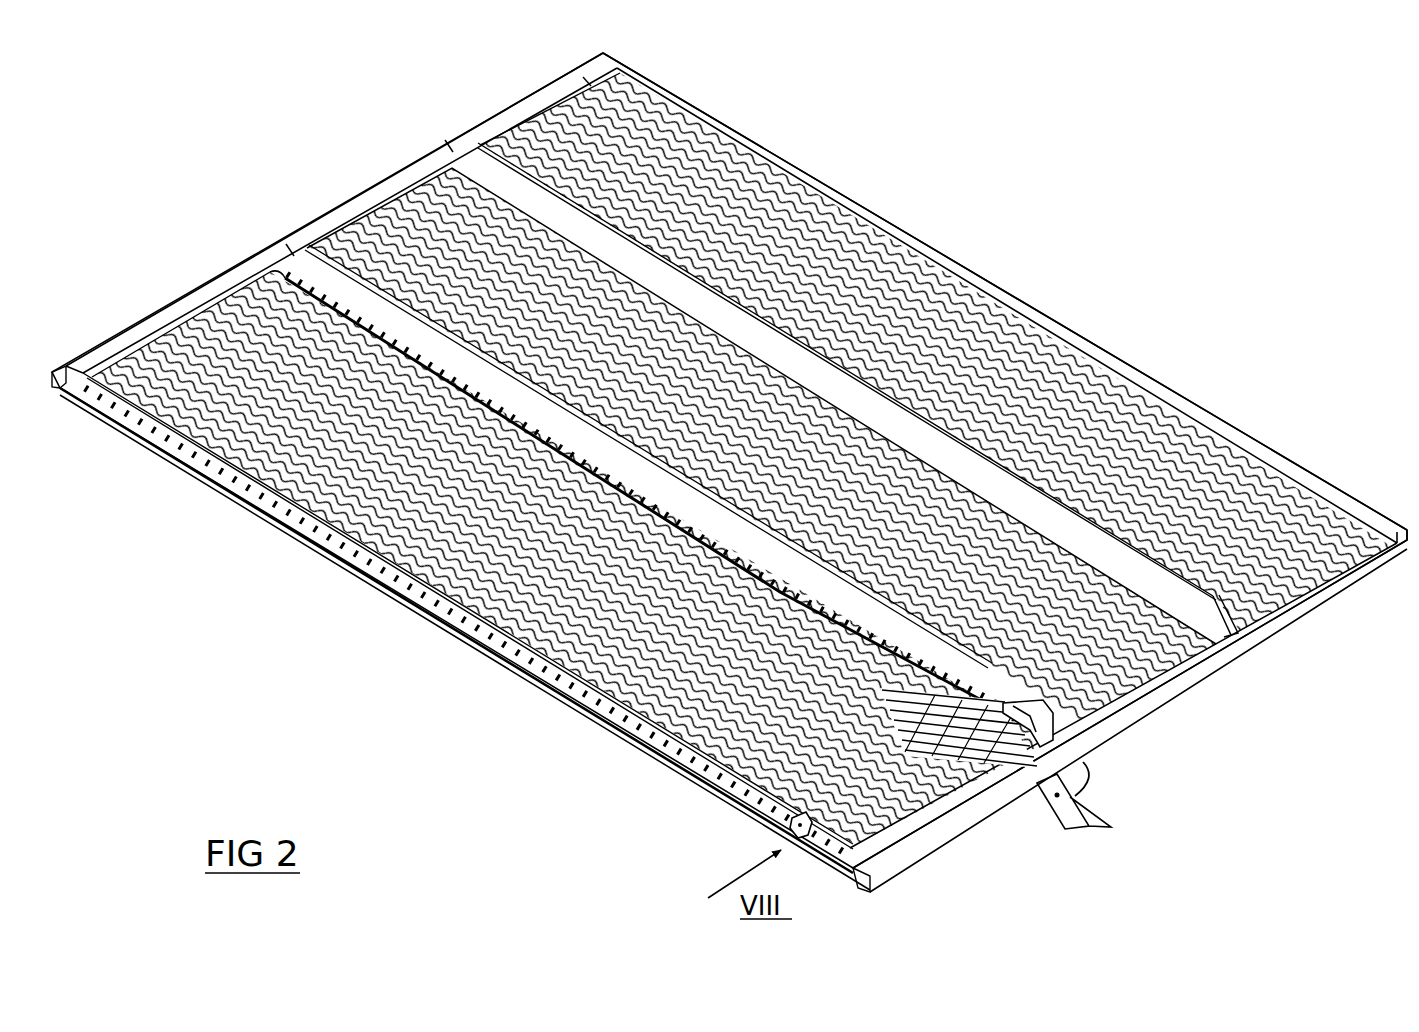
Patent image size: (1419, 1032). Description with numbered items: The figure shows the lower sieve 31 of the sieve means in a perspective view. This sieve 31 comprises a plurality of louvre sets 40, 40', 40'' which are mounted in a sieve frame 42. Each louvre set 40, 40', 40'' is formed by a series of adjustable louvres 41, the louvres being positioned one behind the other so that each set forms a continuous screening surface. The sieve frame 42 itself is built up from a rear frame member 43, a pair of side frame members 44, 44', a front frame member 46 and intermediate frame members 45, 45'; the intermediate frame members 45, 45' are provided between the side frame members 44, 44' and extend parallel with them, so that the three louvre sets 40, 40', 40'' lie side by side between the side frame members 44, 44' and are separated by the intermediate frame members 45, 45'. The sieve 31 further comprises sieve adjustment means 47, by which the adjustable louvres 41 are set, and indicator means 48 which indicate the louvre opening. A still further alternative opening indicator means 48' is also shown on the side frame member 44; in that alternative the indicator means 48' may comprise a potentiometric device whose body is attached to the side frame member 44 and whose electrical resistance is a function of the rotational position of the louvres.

The lower sieve 31 is at (476, 679).
The louvre set 40 is at (571, 553).
The louvre set 40' is at (760, 430).
The louvre set 40'' is at (934, 341).
The adjustable louvre 41 is at (760, 762).
The sieve frame 42 is at (554, 721).
The rear frame member 43 is at (1315, 623).
The side frame member 44 is at (468, 613).
The side frame member 44' is at (1005, 298).
The intermediate frame member 45 is at (268, 233).
The intermediate frame member 45' is at (441, 121).
The front frame member 46 is at (215, 278).
The sieve adjustment means 47 is at (1092, 787).
The indicator means 48 is at (1057, 728).
The alternative opening indicator means 48' is at (747, 841).